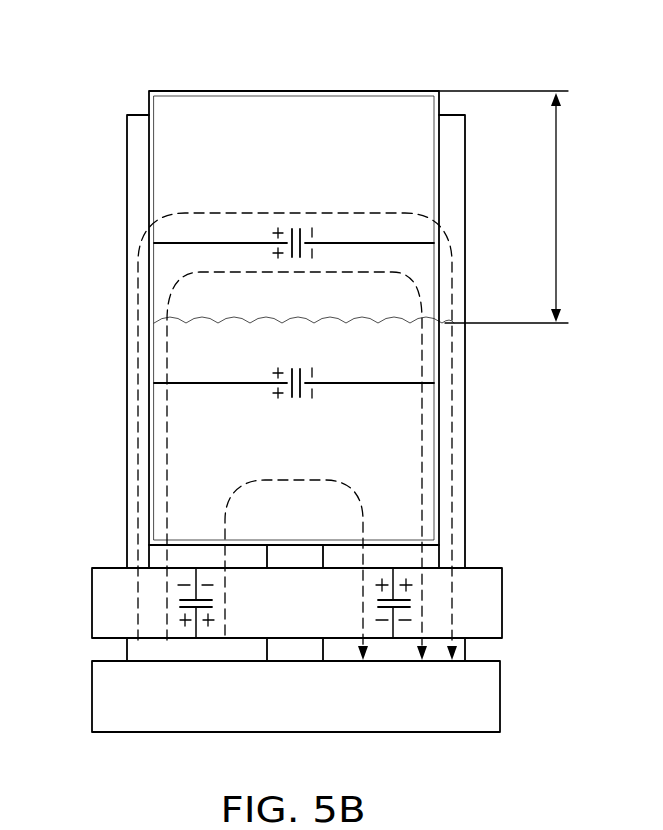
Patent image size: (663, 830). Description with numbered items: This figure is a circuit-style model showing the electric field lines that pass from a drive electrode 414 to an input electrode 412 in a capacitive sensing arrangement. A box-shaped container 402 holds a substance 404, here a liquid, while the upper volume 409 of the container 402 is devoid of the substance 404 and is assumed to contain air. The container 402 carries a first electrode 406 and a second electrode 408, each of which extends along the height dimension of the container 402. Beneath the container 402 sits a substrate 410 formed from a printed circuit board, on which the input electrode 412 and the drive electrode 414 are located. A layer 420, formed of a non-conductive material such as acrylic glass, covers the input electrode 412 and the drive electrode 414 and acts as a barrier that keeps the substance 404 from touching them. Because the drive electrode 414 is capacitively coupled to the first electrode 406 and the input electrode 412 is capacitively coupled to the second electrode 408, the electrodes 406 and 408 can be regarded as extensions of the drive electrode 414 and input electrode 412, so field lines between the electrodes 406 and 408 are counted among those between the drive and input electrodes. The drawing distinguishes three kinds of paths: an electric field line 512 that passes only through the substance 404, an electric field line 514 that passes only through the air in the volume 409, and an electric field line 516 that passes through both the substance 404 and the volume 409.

The container 402 is at (369, 68).
The substance 404 is at (391, 457).
The first electrode 406 is at (137, 160).
The second electrode 408 is at (455, 160).
The volume 409 is at (557, 208).
The substrate 410 is at (100, 697).
The input electrode 412 is at (405, 650).
The drive electrode 414 is at (187, 650).
The layer 420 is at (100, 604).
The electric field line 512 is at (237, 500).
The electric field line 514 is at (222, 211).
The electric field line 516 is at (167, 362).